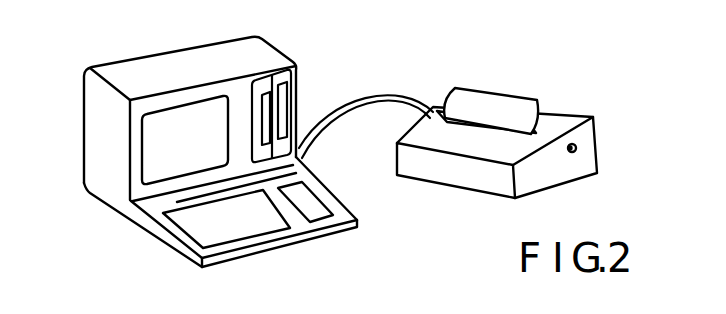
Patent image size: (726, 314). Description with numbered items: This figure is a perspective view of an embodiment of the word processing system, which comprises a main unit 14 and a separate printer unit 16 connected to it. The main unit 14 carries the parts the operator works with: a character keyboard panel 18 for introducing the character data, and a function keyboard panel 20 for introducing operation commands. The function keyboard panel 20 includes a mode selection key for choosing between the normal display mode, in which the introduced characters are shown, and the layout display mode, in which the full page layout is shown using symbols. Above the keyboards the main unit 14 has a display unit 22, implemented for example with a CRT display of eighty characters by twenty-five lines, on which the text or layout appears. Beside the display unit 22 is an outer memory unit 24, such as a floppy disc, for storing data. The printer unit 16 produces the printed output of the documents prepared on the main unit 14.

The main unit 14 is at (225, 164).
The printer unit 16 is at (590, 110).
The character keyboard panel 18 is at (263, 227).
The function keyboard panel 20 is at (318, 206).
The display unit 22 is at (148, 163).
The outer memory unit 24 is at (297, 100).